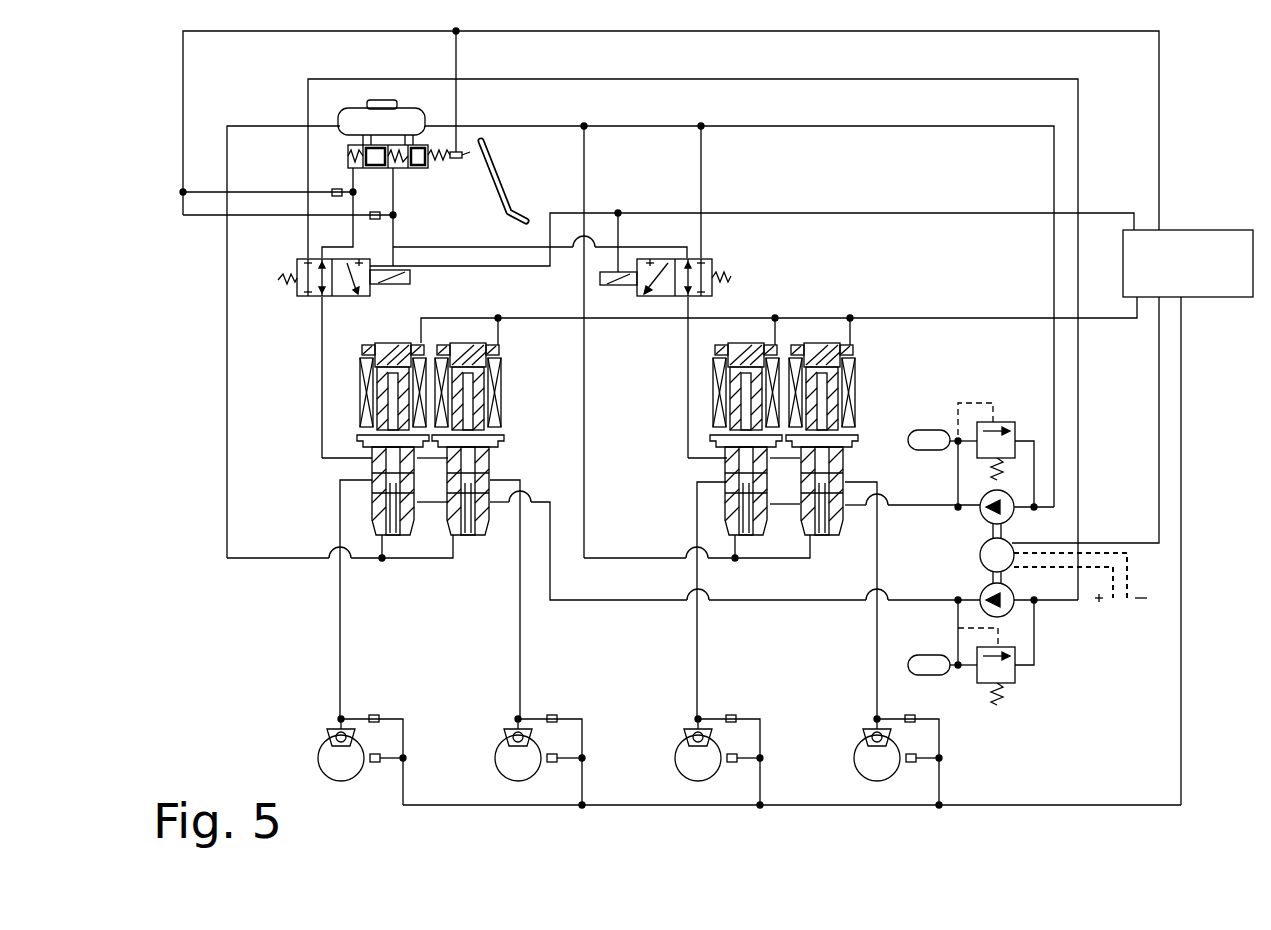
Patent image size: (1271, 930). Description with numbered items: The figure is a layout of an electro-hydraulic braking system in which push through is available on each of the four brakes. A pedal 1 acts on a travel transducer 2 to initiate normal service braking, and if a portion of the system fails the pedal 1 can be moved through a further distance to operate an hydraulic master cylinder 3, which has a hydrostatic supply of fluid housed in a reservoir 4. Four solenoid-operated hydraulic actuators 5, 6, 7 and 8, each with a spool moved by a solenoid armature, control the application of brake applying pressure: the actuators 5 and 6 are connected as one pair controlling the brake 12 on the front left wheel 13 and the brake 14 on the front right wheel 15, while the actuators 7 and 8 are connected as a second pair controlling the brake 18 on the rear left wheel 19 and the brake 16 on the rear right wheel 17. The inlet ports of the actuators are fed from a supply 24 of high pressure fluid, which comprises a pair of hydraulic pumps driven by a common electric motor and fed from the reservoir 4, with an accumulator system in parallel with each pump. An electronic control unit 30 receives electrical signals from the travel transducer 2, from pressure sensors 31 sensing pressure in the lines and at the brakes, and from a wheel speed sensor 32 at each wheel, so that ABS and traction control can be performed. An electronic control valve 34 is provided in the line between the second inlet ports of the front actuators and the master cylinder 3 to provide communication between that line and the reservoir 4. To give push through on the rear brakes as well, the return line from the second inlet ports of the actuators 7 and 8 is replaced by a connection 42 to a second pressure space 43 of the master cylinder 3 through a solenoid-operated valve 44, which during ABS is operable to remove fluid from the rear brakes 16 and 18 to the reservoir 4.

The pedal 1 is at (500, 187).
The travel transducer 2 is at (462, 160).
The hydraulic master cylinder 3 is at (348, 155).
The reservoir 4 is at (358, 113).
The solenoid-operated hydraulic actuator 5 is at (393, 343).
The solenoid-operated hydraulic actuator 6 is at (468, 343).
The solenoid-operated hydraulic actuator 7 is at (746, 343).
The solenoid-operated hydraulic actuator 8 is at (822, 343).
The brake 12 is at (336, 731).
The front left wheel 13 is at (332, 777).
The brake 14 is at (514, 731).
The front right wheel 15 is at (497, 775).
The brake 16 is at (872, 731).
The rear right wheel 17 is at (870, 775).
The brake 18 is at (693, 731).
The rear left wheel 19 is at (691, 775).
The supply of high pressure fluid 24 is at (972, 555).
The electronic control unit 30 is at (1238, 290).
The pressure sensor 31 is at (334, 197).
The wheel speed sensor 32 is at (375, 764).
The electronic control valve 34 is at (305, 298).
The connection 42 is at (688, 405).
The second pressure space 43 is at (400, 170).
The solenoid-operated valve 44 is at (712, 266).